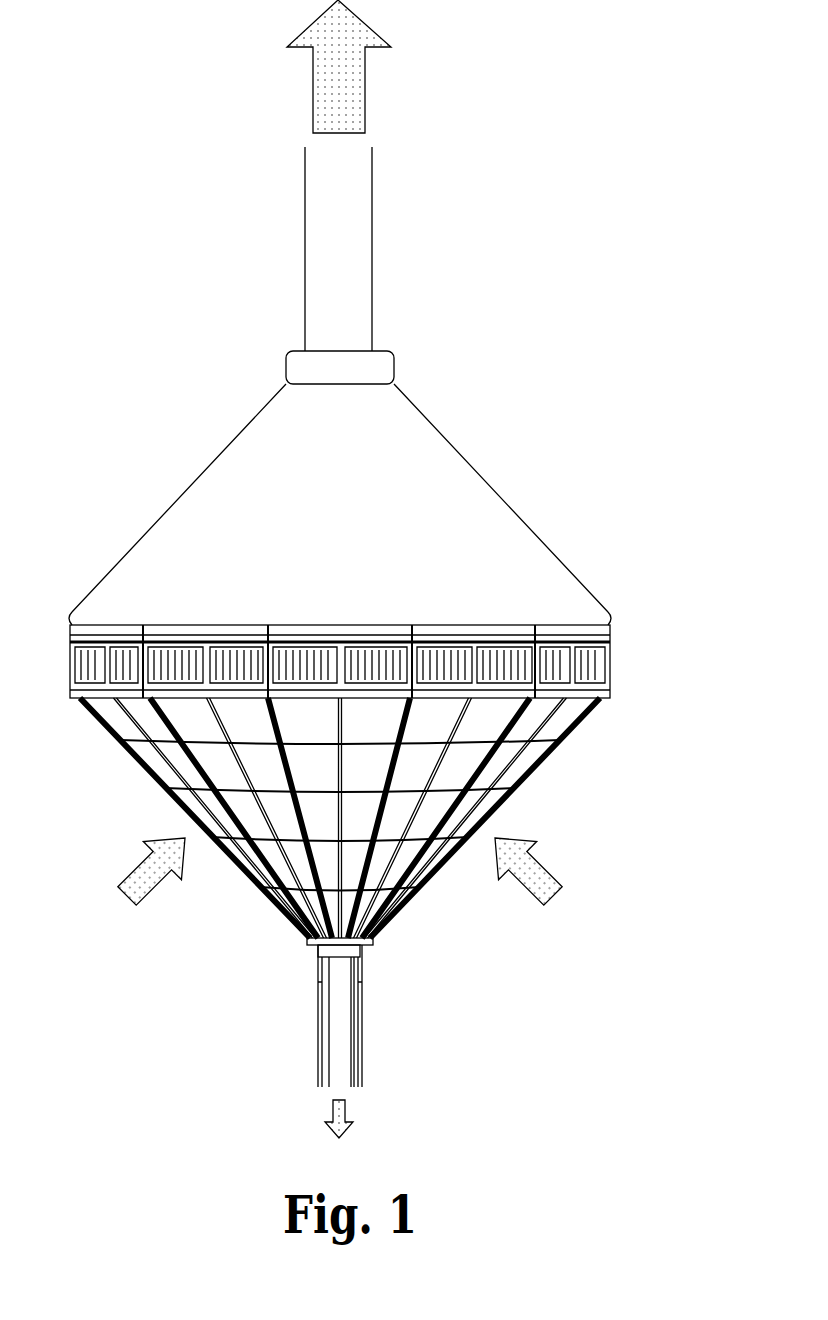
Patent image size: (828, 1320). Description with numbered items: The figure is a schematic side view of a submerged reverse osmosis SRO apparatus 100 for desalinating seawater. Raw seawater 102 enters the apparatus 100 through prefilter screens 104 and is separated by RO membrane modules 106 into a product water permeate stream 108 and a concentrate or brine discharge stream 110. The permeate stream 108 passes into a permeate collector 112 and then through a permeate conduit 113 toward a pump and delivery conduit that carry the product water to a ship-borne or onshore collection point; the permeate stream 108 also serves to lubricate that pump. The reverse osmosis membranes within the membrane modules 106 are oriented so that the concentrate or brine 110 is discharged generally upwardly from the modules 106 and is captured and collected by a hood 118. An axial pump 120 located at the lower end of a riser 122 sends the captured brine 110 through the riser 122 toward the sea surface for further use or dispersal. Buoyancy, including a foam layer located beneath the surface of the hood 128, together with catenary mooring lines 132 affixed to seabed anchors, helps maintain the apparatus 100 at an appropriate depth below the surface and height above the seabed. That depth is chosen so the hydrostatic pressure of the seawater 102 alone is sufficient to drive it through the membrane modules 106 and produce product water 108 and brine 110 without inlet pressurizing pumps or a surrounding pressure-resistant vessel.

The SRO apparatus 100 is at (607, 353).
The raw seawater 102 is at (132, 888).
The prefilter screens 104 is at (522, 766).
The RO membrane modules 106 is at (598, 685).
The product water permeate stream 108 is at (345, 1130).
The concentrate or brine discharge stream 110 is at (352, 117).
The permeate collector 112 is at (325, 948).
The permeate conduit 113 is at (340, 1028).
The hood 118 is at (183, 485).
The axial pump 120 is at (385, 370).
The riser 122 is at (372, 280).
The hood 128 is at (508, 520).
The catenary mooring lines 132 is at (360, 972).